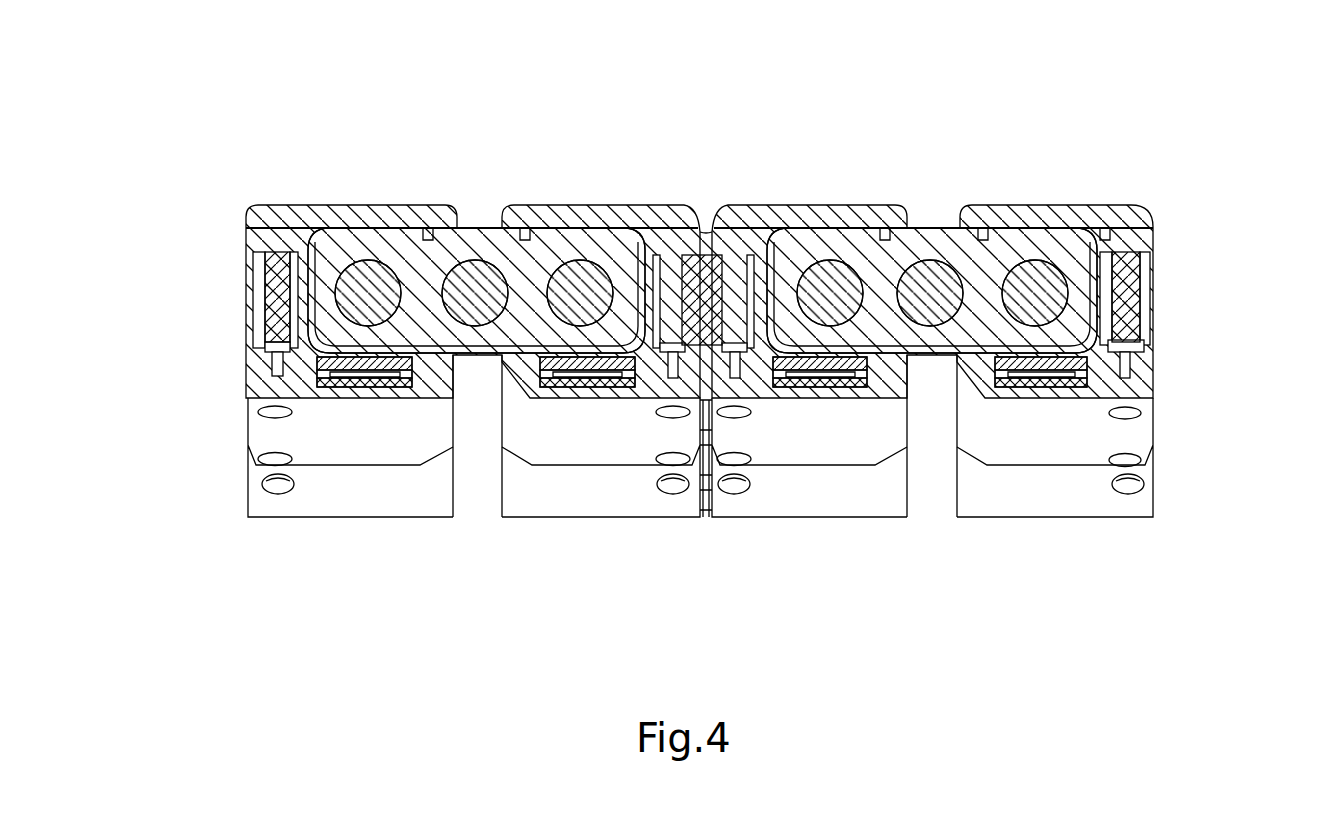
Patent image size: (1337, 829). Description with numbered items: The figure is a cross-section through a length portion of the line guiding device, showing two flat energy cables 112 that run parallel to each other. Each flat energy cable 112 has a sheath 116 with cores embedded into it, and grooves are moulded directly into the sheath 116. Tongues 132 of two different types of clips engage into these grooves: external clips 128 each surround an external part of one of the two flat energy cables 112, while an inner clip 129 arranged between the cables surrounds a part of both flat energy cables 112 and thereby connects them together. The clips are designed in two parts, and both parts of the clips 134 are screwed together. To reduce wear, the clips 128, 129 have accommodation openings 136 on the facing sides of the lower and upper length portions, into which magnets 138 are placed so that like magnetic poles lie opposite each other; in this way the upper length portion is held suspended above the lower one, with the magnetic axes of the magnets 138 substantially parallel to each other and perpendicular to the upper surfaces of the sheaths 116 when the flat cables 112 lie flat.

The flat energy cable 112 is at (482, 490).
The sheath 116 is at (590, 258).
The external clip 128 is at (295, 520).
The inner clip 129 is at (745, 512).
The tongue 132 is at (457, 228).
The clip 134 is at (247, 368).
The accommodation opening 136 is at (400, 400).
The magnet 138 is at (363, 400).